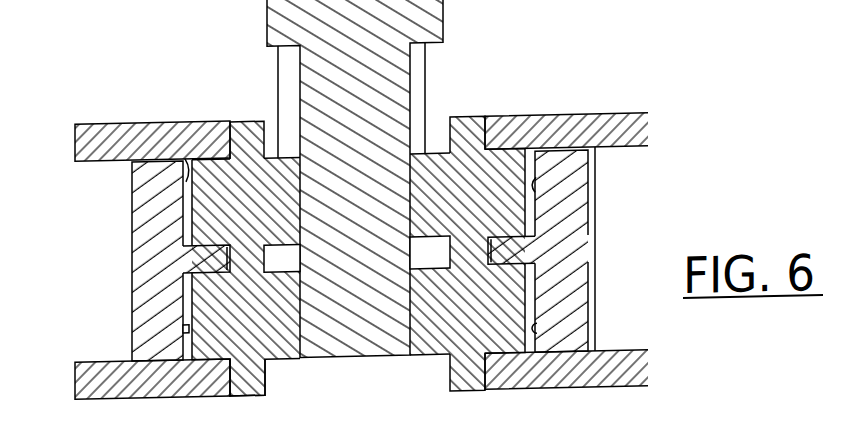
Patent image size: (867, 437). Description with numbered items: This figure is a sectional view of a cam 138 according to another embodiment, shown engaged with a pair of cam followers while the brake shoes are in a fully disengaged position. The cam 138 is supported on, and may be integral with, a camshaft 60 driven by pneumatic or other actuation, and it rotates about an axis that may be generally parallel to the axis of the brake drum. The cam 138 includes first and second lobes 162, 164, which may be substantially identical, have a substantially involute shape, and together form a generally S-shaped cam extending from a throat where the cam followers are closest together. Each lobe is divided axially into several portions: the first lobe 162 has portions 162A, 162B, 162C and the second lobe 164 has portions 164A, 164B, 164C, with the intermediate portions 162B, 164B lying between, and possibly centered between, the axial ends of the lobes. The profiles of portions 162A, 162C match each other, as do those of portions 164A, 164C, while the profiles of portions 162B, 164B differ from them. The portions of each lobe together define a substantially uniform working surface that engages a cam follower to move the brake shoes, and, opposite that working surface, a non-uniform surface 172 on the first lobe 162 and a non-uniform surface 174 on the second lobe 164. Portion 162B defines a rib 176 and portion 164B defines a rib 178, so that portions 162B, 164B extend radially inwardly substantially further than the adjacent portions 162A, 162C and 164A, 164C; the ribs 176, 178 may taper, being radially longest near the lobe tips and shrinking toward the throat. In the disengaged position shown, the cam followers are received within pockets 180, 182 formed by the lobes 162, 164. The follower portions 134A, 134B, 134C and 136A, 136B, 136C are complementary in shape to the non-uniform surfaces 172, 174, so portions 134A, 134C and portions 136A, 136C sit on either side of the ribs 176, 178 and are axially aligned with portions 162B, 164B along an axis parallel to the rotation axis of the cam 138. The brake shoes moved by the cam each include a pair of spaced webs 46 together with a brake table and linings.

The web 46 is at (127, 141).
The camshaft 60 is at (398, 84).
The cam follower portion 134A is at (242, 338).
The cam follower portion 134B is at (290, 369).
The cam follower portion 134C is at (222, 172).
The cam follower portion 136A is at (483, 334).
The cam follower portion 136B is at (470, 260).
The cam follower portion 136C is at (438, 163).
The cam 138 is at (133, 242).
The first lobe 162 is at (148, 233).
The lobe portion 162A is at (147, 314).
The lobe portion 162B is at (188, 266).
The lobe portion 162C is at (142, 183).
The second lobe 164 is at (573, 223).
The lobe portion 164A is at (575, 323).
The lobe portion 164B is at (528, 262).
The lobe portion 164C is at (580, 180).
The non-uniform surface 172 is at (177, 337).
The non-uniform surface 174 is at (538, 342).
The rib 176 is at (215, 270).
The rib 178 is at (503, 246).
The pocket 180 is at (184, 162).
The pocket 182 is at (532, 194).